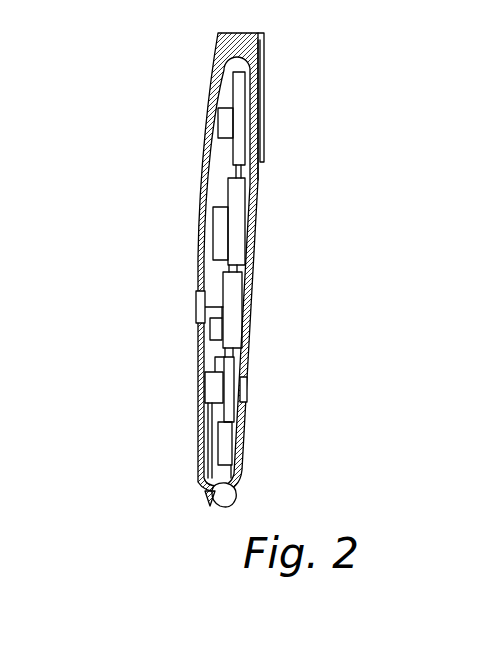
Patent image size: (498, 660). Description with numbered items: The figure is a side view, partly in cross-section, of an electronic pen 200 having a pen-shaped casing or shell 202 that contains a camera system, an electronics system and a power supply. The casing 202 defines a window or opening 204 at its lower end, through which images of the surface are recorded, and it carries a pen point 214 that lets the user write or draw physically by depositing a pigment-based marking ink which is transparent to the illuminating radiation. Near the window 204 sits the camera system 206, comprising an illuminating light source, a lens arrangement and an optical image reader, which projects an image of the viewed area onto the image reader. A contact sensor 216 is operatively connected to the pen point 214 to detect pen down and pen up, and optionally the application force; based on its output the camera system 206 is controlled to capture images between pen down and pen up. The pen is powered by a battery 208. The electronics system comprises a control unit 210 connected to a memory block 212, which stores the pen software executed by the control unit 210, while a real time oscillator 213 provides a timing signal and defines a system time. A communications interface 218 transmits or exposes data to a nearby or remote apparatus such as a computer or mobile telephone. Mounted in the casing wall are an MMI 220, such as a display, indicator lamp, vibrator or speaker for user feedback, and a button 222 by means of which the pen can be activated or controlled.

The electronic pen 200 is at (150, 89).
The casing 202 is at (255, 188).
The window 204 is at (236, 488).
The camera system 206 is at (231, 442).
The battery 208 is at (220, 233).
The control unit 210 is at (242, 308).
The memory block 212 is at (243, 223).
The real time oscillator 213 is at (207, 334).
The pen point 214 is at (208, 501).
The contact sensor 216 is at (212, 393).
The communications interface 218 is at (241, 110).
The MMI 220 is at (196, 307).
The button 222 is at (247, 388).